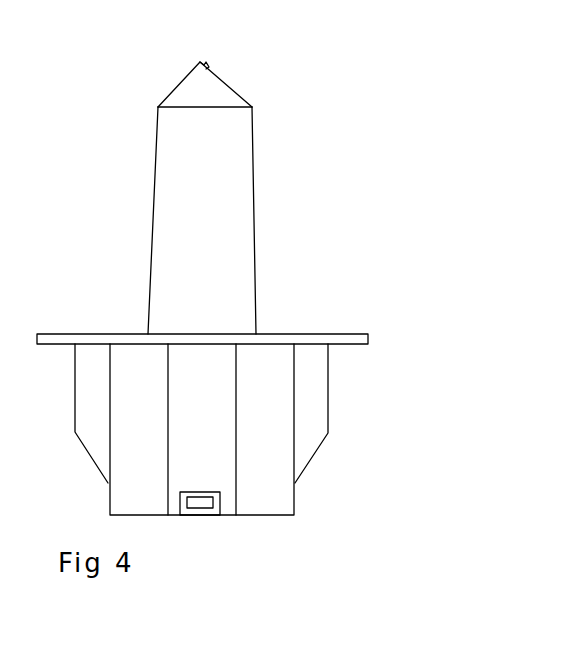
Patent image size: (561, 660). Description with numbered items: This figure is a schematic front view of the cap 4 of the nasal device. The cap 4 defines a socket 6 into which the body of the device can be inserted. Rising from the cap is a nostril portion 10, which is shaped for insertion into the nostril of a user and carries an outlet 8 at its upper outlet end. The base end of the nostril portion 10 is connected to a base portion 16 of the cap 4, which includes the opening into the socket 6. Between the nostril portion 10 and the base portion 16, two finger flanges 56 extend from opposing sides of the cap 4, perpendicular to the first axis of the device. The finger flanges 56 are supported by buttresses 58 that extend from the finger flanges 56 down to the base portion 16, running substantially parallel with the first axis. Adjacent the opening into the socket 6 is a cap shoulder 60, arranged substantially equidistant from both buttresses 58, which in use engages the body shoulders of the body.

The cap 4 is at (273, 158).
The socket 6 is at (265, 532).
The outlet 8 is at (208, 63).
The nostril portion 10 is at (237, 222).
The base portion 16 is at (268, 442).
The finger flanges 56 is at (63, 332).
The buttresses 58 is at (88, 392).
The cap shoulder 60 is at (200, 501).